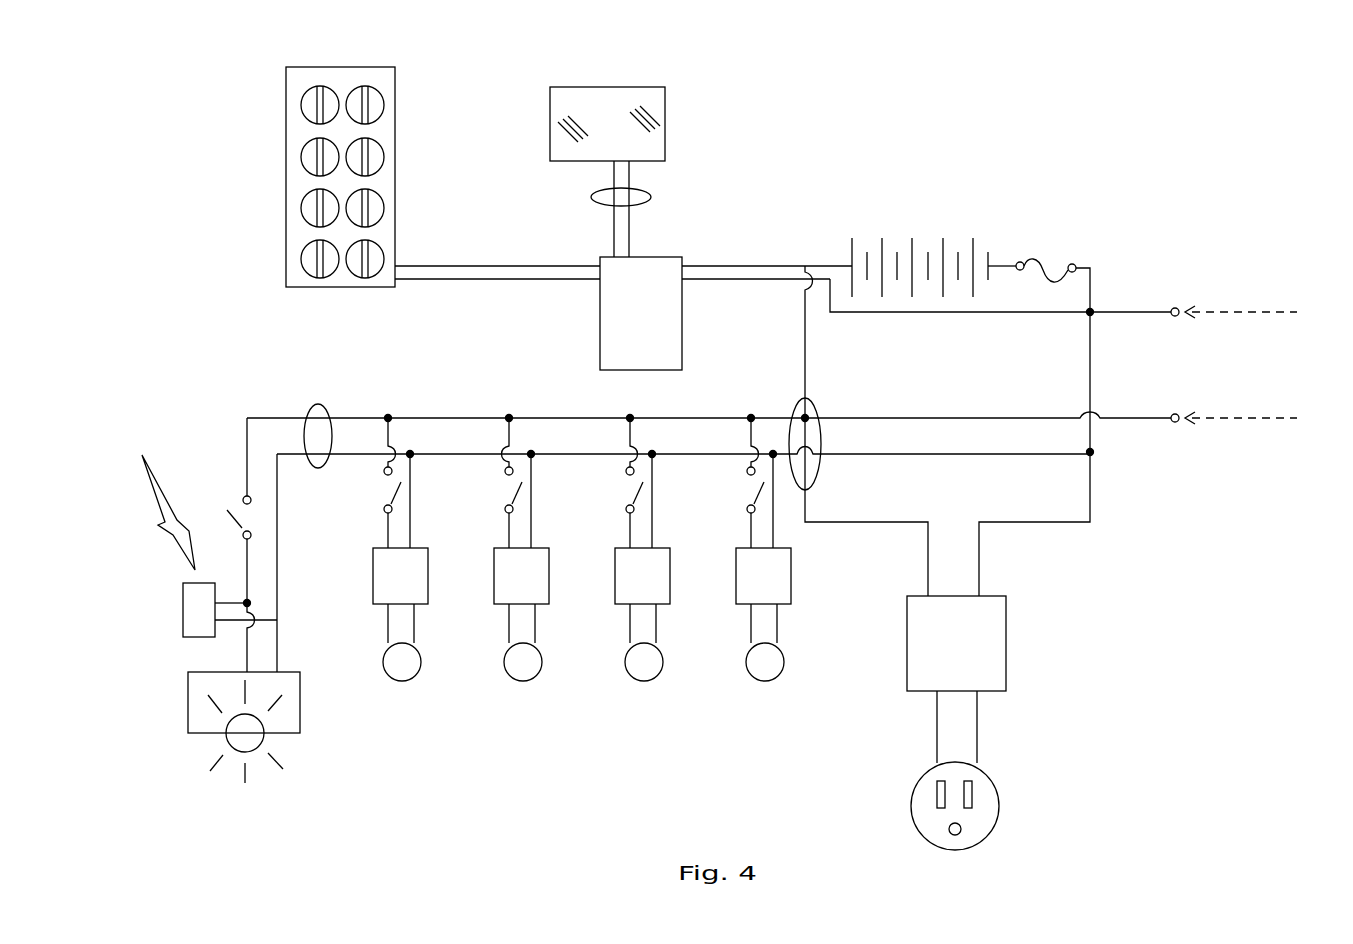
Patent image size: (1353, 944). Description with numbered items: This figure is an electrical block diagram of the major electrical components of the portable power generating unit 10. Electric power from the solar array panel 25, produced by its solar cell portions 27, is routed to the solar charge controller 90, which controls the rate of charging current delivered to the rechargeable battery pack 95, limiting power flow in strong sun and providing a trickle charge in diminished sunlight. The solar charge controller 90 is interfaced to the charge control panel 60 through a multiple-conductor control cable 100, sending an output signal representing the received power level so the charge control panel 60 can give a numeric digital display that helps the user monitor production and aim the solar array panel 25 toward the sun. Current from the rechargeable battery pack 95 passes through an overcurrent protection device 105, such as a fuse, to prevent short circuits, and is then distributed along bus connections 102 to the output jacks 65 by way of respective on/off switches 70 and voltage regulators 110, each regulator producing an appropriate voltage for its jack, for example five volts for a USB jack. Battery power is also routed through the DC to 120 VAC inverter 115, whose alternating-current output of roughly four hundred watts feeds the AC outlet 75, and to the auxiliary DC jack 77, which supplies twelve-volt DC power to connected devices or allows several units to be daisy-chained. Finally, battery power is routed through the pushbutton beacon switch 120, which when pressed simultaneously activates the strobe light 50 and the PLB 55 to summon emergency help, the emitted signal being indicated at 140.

The portable power generating unit 10 is at (228, 361).
The solar array panel 25 is at (283, 177).
The solar cell portions 27 is at (355, 152).
The strobe light 50 is at (243, 743).
The PLB 55 is at (195, 630).
The charge control panel 60 is at (665, 140).
The output jacks 65 is at (395, 681).
The on/off switches 70 is at (384, 488).
The AC outlet 75 is at (988, 798).
The auxiliary DC jack 77 is at (1173, 317).
The solar charge controller 90 is at (665, 257).
The rechargeable battery pack 95 is at (882, 246).
The multiple-conductor control cable 100 is at (591, 197).
The bus connectors 102 is at (330, 410).
The overcurrent protection device 105 is at (1040, 263).
The voltage regulators 110 is at (420, 586).
The DC to 120 VAC inverter 115 is at (975, 669).
The beacon switch 120 is at (238, 500).
The signal indicator 140 is at (152, 474).